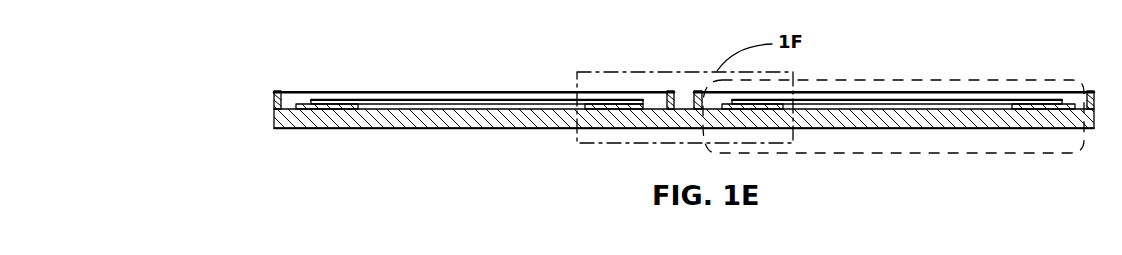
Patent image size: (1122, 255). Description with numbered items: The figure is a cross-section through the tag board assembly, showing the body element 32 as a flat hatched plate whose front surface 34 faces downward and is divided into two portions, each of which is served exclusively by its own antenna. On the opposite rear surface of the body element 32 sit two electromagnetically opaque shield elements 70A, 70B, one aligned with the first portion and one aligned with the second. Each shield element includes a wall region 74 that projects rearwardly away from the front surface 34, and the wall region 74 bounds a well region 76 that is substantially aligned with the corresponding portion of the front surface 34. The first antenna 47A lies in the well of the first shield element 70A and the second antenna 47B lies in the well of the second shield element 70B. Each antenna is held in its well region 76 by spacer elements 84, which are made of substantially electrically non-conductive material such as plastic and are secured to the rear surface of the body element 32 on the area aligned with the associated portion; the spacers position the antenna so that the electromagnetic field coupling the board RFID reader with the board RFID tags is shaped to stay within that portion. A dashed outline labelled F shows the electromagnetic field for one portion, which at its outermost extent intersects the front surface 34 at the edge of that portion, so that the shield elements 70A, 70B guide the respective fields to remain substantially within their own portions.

The body element 32 is at (268, 128).
The front surface 34 is at (422, 130).
The wall region 74 is at (274, 95).
The well region 76 is at (367, 97).
The spacer element 84 is at (303, 103).
The first shield element 70A is at (469, 79).
The second shield element 70B is at (898, 73).
The first antenna 47A is at (502, 98).
The second antenna 47B is at (967, 100).
The electromagnetic field F is at (982, 153).